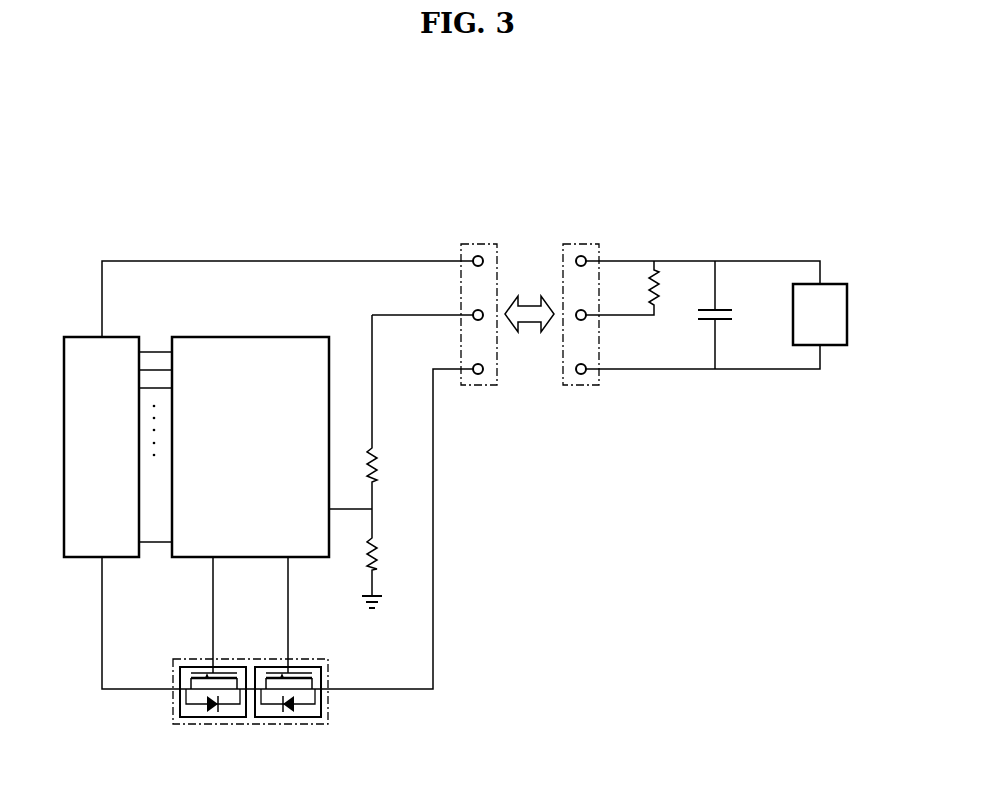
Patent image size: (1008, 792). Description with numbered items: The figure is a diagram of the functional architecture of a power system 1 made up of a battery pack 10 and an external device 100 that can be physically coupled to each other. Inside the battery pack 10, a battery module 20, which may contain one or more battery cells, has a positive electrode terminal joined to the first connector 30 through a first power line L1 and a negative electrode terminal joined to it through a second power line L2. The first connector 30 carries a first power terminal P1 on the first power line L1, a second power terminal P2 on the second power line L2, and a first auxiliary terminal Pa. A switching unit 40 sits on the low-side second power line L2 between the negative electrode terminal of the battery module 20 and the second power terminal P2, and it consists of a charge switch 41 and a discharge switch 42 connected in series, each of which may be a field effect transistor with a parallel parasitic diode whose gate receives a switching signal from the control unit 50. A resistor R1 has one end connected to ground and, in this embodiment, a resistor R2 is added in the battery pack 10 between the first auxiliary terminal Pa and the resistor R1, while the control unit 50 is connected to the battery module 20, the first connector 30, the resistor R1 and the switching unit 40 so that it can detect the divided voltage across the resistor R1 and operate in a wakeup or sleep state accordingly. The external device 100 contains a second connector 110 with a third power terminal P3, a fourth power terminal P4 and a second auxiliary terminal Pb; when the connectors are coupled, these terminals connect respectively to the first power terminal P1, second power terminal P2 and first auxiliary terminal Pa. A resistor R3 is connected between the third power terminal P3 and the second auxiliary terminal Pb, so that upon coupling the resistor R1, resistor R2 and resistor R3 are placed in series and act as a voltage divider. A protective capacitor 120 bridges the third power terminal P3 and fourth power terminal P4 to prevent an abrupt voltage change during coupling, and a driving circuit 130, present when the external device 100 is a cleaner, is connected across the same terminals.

The power system 1 is at (195, 111).
The battery pack 10 is at (280, 468).
The battery module 20 is at (80, 337).
The first connector 30 is at (452, 316).
The switching unit 40 is at (252, 662).
The charge switch 41 is at (321, 707).
The discharge switch 42 is at (180, 707).
The control unit 50 is at (296, 337).
The external device 100 is at (713, 301).
The second connector 110 is at (614, 316).
The protective capacitor 120 is at (735, 311).
The driving circuit 130 is at (843, 284).
The resistor R1 is at (380, 548).
The resistor R2 is at (380, 462).
The resistor R3 is at (660, 283).
The first power line L1 is at (297, 261).
The second power line L2 is at (389, 689).
The first power terminal P1 is at (478, 256).
The second power terminal P2 is at (478, 374).
The first auxiliary terminal Pa is at (473, 313).
The third power terminal P3 is at (581, 256).
The fourth power terminal P4 is at (581, 374).
The second auxiliary terminal Pb is at (586, 313).